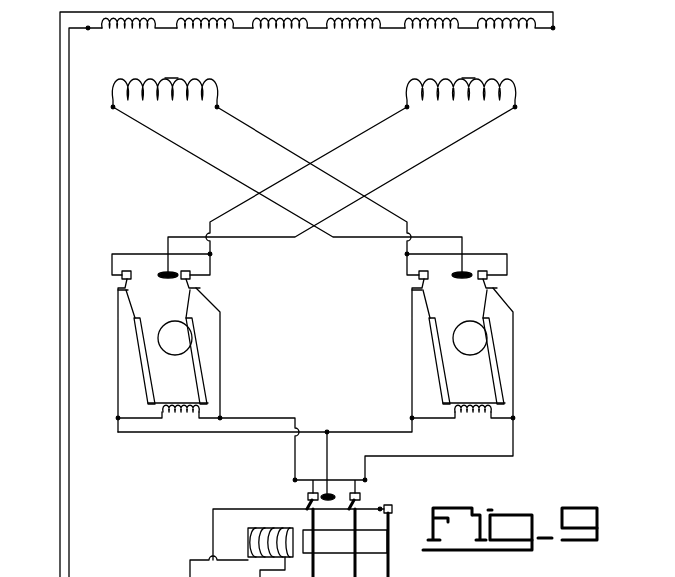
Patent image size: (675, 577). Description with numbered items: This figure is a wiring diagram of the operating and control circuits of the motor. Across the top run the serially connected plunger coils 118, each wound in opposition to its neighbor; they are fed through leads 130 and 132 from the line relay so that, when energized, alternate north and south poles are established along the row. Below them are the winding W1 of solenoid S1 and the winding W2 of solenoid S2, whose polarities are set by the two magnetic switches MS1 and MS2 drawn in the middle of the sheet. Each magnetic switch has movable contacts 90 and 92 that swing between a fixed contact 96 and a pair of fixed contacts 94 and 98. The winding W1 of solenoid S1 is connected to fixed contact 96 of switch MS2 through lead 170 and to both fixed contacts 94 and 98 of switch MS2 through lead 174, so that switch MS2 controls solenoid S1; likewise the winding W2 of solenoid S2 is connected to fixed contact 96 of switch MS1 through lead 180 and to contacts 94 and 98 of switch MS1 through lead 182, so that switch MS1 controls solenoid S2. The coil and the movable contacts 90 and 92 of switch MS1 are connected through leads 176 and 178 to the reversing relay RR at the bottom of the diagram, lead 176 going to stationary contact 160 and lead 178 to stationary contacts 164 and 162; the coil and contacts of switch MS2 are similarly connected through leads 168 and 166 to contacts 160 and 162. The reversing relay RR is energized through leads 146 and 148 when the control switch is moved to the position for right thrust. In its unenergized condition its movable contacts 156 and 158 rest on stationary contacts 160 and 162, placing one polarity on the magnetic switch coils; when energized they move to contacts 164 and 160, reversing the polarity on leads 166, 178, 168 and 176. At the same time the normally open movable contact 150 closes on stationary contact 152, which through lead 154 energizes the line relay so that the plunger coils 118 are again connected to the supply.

The plunger coils 118 is at (142, 30).
The winding of solenoid S1 W1 is at (185, 100).
The winding of solenoid S2 W2 is at (477, 100).
The solenoid S1 is at (170, 76).
The solenoid S2 is at (470, 76).
The lead 130 is at (69, 240).
The lead 132 is at (60, 276).
The lead 170 is at (176, 155).
The lead 174 is at (285, 136).
The lead 180 is at (442, 153).
The lead 182 is at (375, 124).
The magnetic switch MS1 is at (130, 377).
The magnetic switch MS2 is at (510, 380).
The movable contact 90 is at (129, 273).
The movable contact 92 is at (187, 272).
The fixed contact 94 is at (118, 282).
The fixed contact 96 is at (168, 279).
The fixed contact 98 is at (207, 278).
The lead 176 is at (223, 433).
The lead 178 is at (253, 410).
The lead 168 is at (379, 425).
The lead 166 is at (437, 449).
The stationary contact 164 is at (302, 499).
The stationary contact 160 is at (332, 496).
The stationary contact 162 is at (362, 497).
The lead 154 is at (232, 511).
The stationary contact 152 is at (381, 507).
The movable contact 150 is at (393, 512).
The movable contact 156 is at (310, 509).
The movable contact 158 is at (356, 509).
The reversing relay RR is at (291, 529).
The lead 146 is at (219, 566).
The lead 148 is at (274, 567).